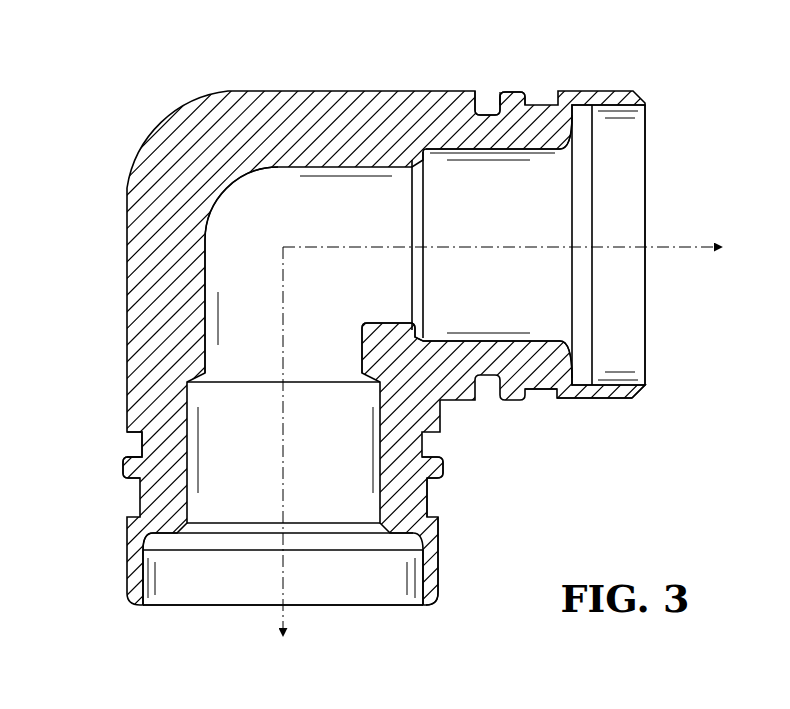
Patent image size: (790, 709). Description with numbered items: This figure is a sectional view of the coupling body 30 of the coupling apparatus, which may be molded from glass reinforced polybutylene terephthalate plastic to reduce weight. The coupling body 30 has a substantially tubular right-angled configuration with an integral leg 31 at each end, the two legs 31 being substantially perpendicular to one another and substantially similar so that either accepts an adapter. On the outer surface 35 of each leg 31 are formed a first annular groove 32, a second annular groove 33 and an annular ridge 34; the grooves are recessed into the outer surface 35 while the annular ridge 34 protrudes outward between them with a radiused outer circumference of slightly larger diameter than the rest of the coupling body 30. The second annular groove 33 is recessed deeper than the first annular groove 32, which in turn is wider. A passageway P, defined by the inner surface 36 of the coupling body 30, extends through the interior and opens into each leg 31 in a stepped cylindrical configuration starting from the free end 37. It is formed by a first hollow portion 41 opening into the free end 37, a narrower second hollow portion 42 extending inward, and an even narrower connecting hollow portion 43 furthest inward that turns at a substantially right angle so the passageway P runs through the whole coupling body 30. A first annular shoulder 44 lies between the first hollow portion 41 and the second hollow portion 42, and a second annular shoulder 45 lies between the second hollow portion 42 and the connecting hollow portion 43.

The coupling body 30 is at (108, 105).
The leg 31 is at (618, 104).
The first annular groove 32 is at (521, 100).
The second annular groove 33 is at (487, 113).
The annular ridge 34 is at (443, 466).
The outer surface 35 is at (440, 556).
The inner surface 36 is at (203, 264).
The free end 37 is at (645, 318).
The first hollow portion 41 is at (437, 594).
The second hollow portion 42 is at (430, 488).
The connecting hollow portion 43 is at (385, 325).
The first annular shoulder 44 is at (566, 115).
The second annular shoulder 45 is at (423, 146).